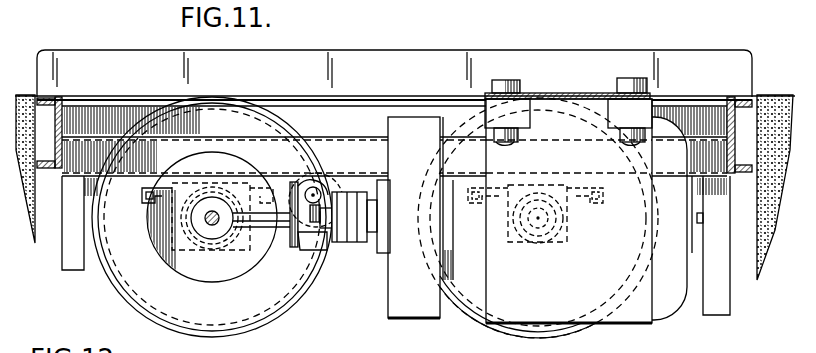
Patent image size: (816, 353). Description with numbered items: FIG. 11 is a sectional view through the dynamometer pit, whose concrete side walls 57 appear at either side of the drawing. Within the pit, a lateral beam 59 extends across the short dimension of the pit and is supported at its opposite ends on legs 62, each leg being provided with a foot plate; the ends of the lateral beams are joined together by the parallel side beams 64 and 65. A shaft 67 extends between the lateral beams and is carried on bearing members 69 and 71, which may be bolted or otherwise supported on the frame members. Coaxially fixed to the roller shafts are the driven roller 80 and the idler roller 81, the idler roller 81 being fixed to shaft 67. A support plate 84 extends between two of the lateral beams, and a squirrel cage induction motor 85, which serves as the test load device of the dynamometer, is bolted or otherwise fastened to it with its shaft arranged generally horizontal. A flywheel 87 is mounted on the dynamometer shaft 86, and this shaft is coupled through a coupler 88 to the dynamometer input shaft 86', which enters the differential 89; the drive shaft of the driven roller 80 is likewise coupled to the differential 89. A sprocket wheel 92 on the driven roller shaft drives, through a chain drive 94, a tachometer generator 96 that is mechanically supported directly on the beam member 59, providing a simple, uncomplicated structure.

The concrete side wall 57 is at (40, 233).
The beam 59 is at (364, 120).
The leg 62 is at (73, 262).
The beam 64 is at (58, 100).
The beam 65 is at (737, 117).
The shaft 67 is at (541, 246).
The bearing member 69 is at (221, 250).
The bearing member 71 is at (551, 246).
The driven roller 80 is at (128, 283).
The idler roller 81 is at (508, 331).
The support plate 84 is at (566, 96).
The squirrel cage induction motor 85 is at (637, 309).
The dynamometer shaft 86 is at (370, 241).
The dynamometer input shaft 86' is at (284, 244).
The flywheel 87 is at (423, 311).
The coupler 88 is at (348, 188).
The differential 89 is at (248, 268).
The sprocket wheel 92 is at (229, 182).
The chain drive 94 is at (296, 181).
The tachometer generator 96 is at (322, 246).